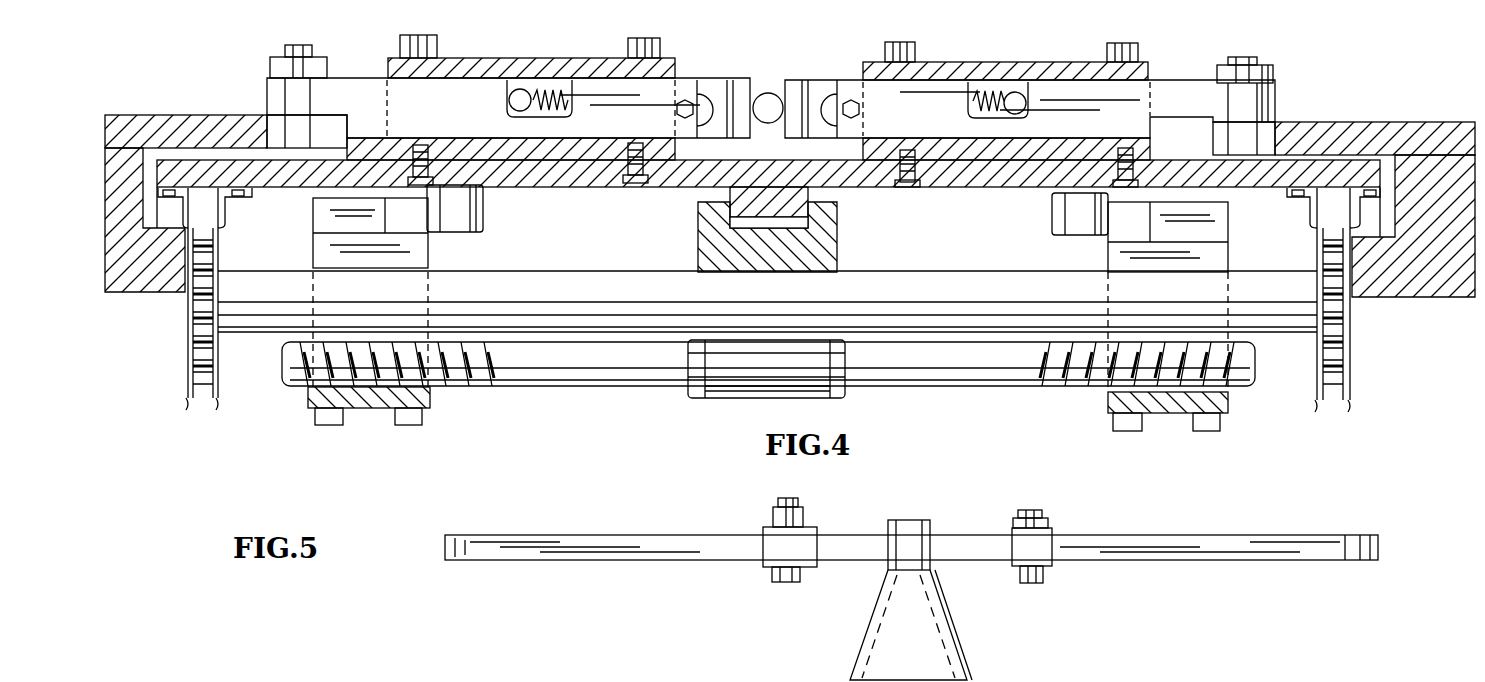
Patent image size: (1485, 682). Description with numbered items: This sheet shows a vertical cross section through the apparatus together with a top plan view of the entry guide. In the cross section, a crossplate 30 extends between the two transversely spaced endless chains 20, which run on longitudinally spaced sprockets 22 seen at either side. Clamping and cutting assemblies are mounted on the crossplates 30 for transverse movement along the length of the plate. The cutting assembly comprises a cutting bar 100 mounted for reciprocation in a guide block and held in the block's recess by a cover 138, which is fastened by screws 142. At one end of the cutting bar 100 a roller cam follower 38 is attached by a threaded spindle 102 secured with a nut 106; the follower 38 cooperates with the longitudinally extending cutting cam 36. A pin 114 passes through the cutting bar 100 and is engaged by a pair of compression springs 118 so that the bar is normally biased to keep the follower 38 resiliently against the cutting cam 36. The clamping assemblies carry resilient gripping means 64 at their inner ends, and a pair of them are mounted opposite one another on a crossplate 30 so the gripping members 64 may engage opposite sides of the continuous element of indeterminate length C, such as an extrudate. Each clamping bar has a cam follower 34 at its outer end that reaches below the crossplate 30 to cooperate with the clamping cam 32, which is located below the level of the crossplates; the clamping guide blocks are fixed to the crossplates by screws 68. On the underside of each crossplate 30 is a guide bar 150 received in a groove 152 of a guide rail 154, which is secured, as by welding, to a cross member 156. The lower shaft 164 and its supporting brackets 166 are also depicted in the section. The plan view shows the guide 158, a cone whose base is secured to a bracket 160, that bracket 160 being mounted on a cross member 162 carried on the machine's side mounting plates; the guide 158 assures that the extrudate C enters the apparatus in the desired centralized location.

In FIG. 4, the endless chain 20 is at (213, 407).
In FIG. 4, the sprocket 22 is at (190, 312).
In FIG. 4, the crossplate 30 is at (590, 178).
In FIG. 4, the clamping cam 32 is at (428, 226).
In FIG. 4, the cam follower 34 is at (485, 208).
In FIG. 4, the cutting cam 36 is at (188, 131).
In FIG. 4, the cam follower 38 is at (327, 141).
In FIG. 4, the resilient gripping means 64 is at (738, 92).
In FIG. 4, the continuous element C is at (772, 95).
In FIG. 4, the screw 68 is at (915, 180).
In FIG. 4, the cutting bar 100 is at (1170, 108).
In FIG. 4, the threaded spindle 102 is at (1243, 57).
In FIG. 4, the nut 106 is at (1262, 74).
In FIG. 4, the pin 114 is at (1012, 94).
In FIG. 4, the compression spring 118 is at (978, 95).
In FIG. 4, the cover 138 is at (1064, 70).
In FIG. 4, the screw 142 is at (1138, 47).
In FIG. 4, the guide bar 150 is at (805, 207).
In FIG. 4, the groove 152 is at (806, 226).
In FIG. 4, the guide rail 154 is at (698, 234).
In FIG. 4, the cross member 156 is at (975, 290).
In FIG. 4, the pinion shaft 164 is at (643, 372).
In FIG. 4, the bearing bracket 166 is at (427, 398).
In FIG. 5, the cross member 162 is at (652, 542).
In FIG. 5, the bracket 160 is at (950, 548).
In FIG. 5, the guide 158 is at (922, 640).